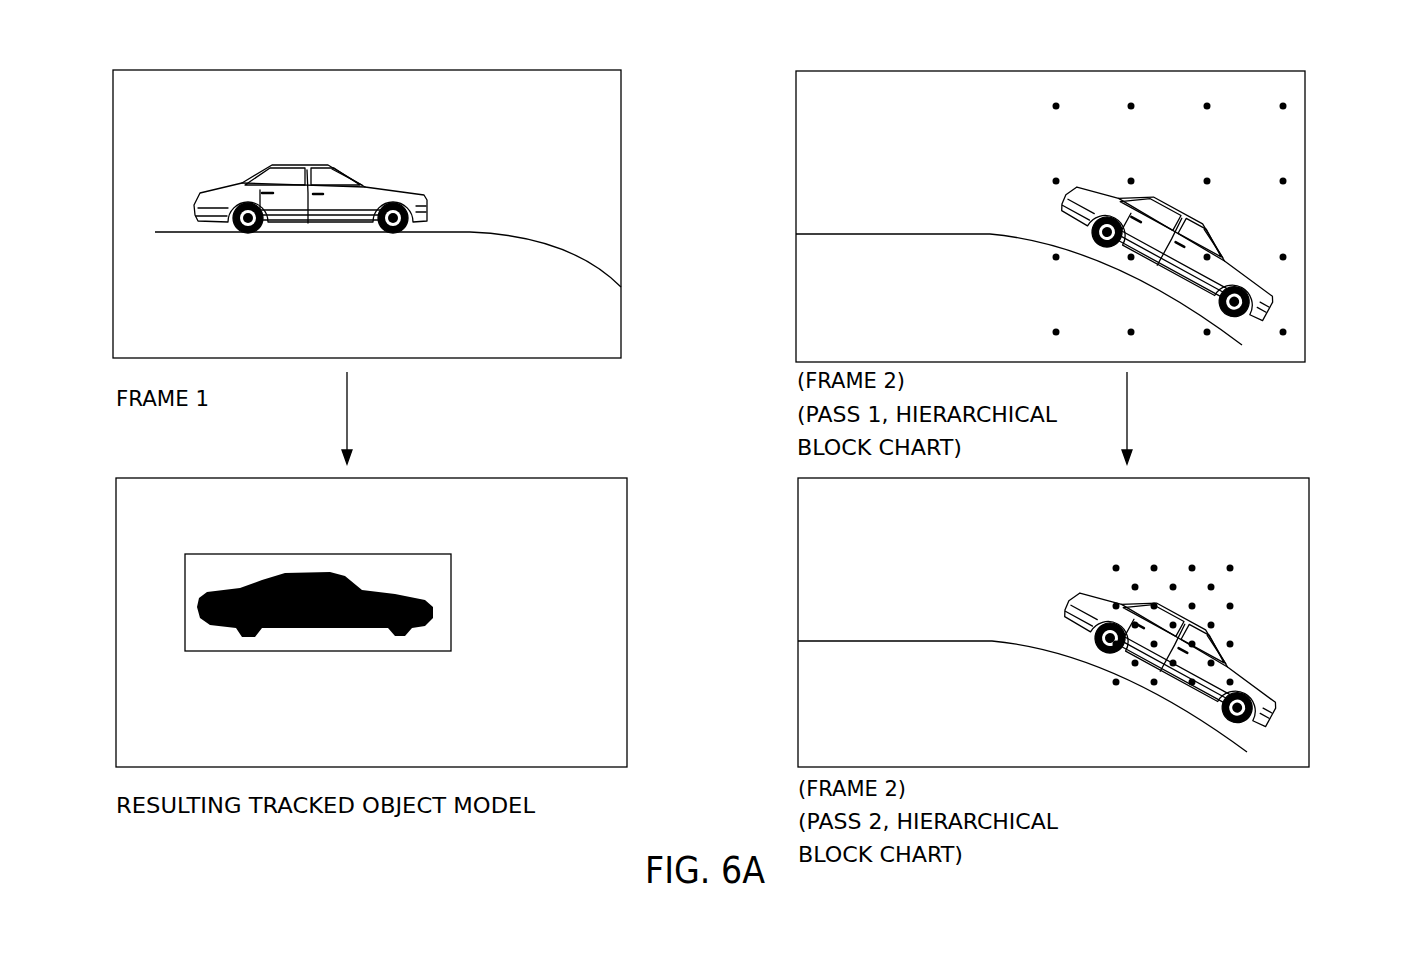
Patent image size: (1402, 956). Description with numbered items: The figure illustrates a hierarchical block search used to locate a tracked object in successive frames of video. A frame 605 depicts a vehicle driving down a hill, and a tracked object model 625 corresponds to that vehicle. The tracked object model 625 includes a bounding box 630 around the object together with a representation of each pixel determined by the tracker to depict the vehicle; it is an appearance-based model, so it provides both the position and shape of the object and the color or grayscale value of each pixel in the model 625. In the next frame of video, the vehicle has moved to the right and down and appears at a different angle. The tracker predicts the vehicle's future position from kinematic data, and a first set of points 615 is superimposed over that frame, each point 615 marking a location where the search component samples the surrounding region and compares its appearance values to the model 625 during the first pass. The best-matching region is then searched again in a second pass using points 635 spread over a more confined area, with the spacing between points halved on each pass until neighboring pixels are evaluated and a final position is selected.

The frame 605 is at (532, 70).
The tracked object model 625 is at (458, 478).
The bounding box 630 is at (363, 587).
The first set of points 615 is at (1209, 180).
The points 635 is at (1192, 606).